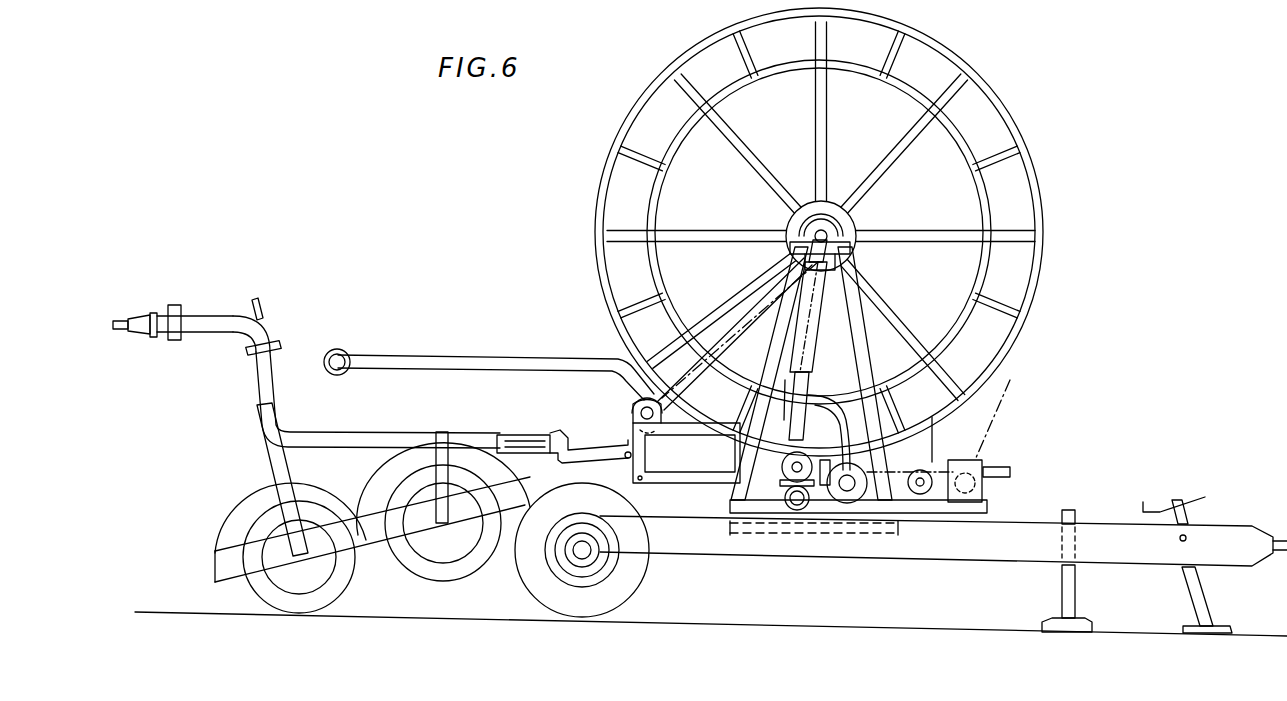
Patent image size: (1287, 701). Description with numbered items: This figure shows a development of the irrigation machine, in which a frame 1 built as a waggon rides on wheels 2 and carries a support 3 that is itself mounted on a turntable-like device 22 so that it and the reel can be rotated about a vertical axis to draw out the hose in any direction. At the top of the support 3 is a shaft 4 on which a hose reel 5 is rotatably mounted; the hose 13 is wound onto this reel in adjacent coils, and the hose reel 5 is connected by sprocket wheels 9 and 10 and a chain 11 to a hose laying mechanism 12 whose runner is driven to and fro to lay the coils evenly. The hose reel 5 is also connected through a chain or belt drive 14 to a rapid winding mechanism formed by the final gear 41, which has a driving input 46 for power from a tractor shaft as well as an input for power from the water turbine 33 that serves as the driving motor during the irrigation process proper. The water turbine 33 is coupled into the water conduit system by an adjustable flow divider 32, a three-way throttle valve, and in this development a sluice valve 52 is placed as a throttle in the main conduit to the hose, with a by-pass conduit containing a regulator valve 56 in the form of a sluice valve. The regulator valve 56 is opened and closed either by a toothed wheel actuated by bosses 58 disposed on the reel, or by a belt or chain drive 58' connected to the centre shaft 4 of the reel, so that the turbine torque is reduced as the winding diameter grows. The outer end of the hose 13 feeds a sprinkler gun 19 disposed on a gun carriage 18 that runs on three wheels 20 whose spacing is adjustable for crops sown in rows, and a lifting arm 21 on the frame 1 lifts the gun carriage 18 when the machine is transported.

The frame 1 is at (768, 550).
The wheels 2 is at (527, 577).
The support 3 is at (868, 320).
The shaft 4 is at (856, 224).
The hose reel 5 is at (1032, 136).
The sprocket wheel 9 is at (826, 212).
The sprocket wheel 10 is at (640, 410).
The chain 11 is at (731, 303).
The hose laying mechanism 12 is at (628, 405).
The hose 13 is at (584, 450).
The chain or belt drive 14 is at (1000, 408).
The gun carriage 18 is at (248, 466).
The sprinkler gun 19 is at (160, 312).
The wheels 20 is at (352, 570).
The lifting arm 21 is at (416, 358).
The turntable-like device 22 is at (868, 538).
The adjustable flow divider 32 is at (770, 470).
The water turbine 33 is at (832, 518).
The final gear 41 is at (990, 488).
The driving input 46 is at (1012, 470).
The sluice valve 52 is at (812, 418).
The regulator valve 56 is at (775, 410).
The bosses 58 is at (819, 232).
The belt or chain drive 58' is at (860, 259).